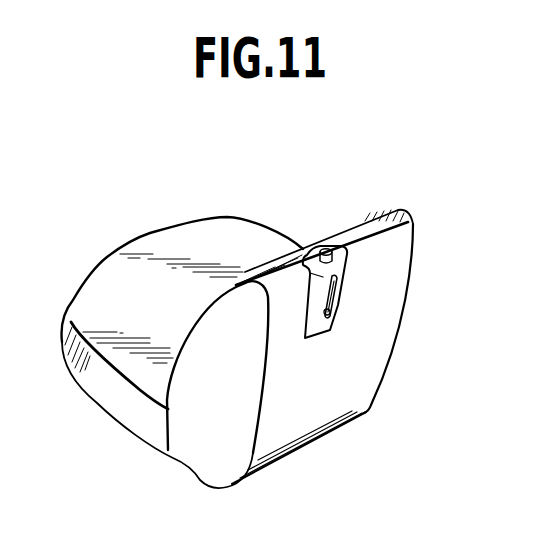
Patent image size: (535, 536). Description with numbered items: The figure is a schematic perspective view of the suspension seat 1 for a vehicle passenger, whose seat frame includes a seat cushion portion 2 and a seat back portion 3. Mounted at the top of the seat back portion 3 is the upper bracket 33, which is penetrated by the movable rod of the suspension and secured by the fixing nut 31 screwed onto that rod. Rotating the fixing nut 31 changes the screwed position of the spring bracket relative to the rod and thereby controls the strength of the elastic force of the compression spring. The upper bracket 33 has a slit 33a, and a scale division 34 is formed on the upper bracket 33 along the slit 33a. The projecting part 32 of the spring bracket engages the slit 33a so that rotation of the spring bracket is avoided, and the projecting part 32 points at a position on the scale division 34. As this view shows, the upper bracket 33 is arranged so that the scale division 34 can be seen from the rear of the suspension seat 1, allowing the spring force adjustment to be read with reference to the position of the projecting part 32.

The suspension seat 1 is at (273, 214).
The seat cushion portion 2 is at (177, 240).
The seat back portion 3 is at (392, 296).
The fixing nut 31 is at (323, 250).
The projecting part 32 is at (329, 312).
The upper bracket 33 is at (345, 250).
The slit 33a is at (344, 277).
The scale division 34 is at (339, 299).